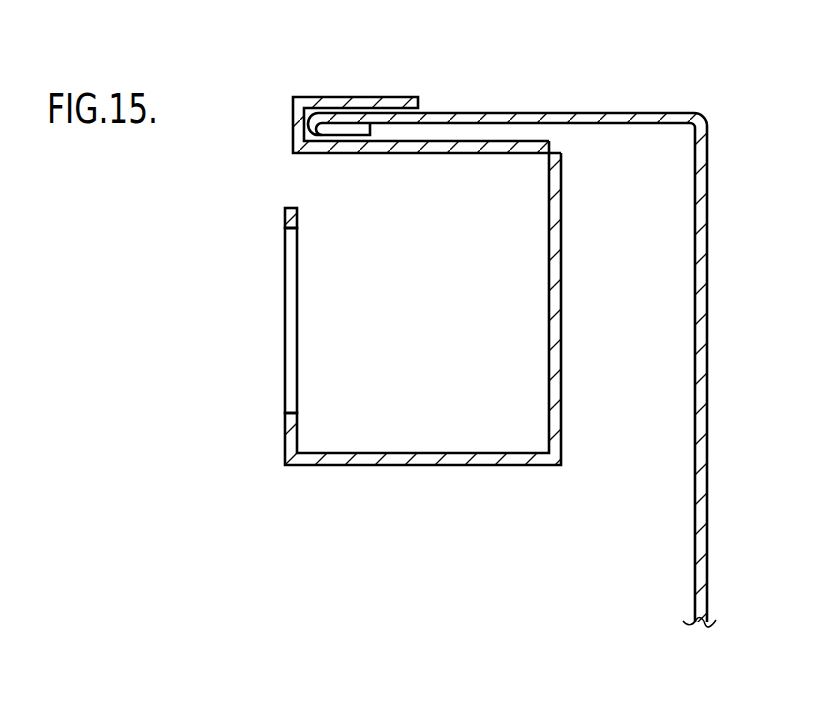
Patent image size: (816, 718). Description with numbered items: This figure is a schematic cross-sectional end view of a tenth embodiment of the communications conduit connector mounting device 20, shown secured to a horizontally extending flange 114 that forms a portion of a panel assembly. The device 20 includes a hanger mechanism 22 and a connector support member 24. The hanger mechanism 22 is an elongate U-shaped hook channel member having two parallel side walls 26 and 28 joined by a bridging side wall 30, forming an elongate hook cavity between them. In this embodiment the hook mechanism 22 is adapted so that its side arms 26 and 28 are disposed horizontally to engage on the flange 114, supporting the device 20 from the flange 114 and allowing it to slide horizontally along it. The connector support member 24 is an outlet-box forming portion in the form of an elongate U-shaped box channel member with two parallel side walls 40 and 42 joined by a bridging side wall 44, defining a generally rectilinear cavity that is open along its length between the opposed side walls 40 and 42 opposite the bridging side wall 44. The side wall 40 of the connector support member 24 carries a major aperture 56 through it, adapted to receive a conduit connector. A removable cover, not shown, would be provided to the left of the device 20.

The communications conduit connector mounting device 20 is at (231, 170).
The hanger mechanism 22 is at (258, 82).
The connector support member 24 is at (247, 477).
The side wall 26 is at (457, 154).
The side wall 28 is at (384, 97).
The bridging side wall 30 is at (293, 108).
The side wall 40 is at (561, 333).
The side wall 42 is at (298, 217).
The bridging side wall 44 is at (470, 457).
The major aperture 56 is at (297, 352).
The horizontal flange 114 is at (551, 103).